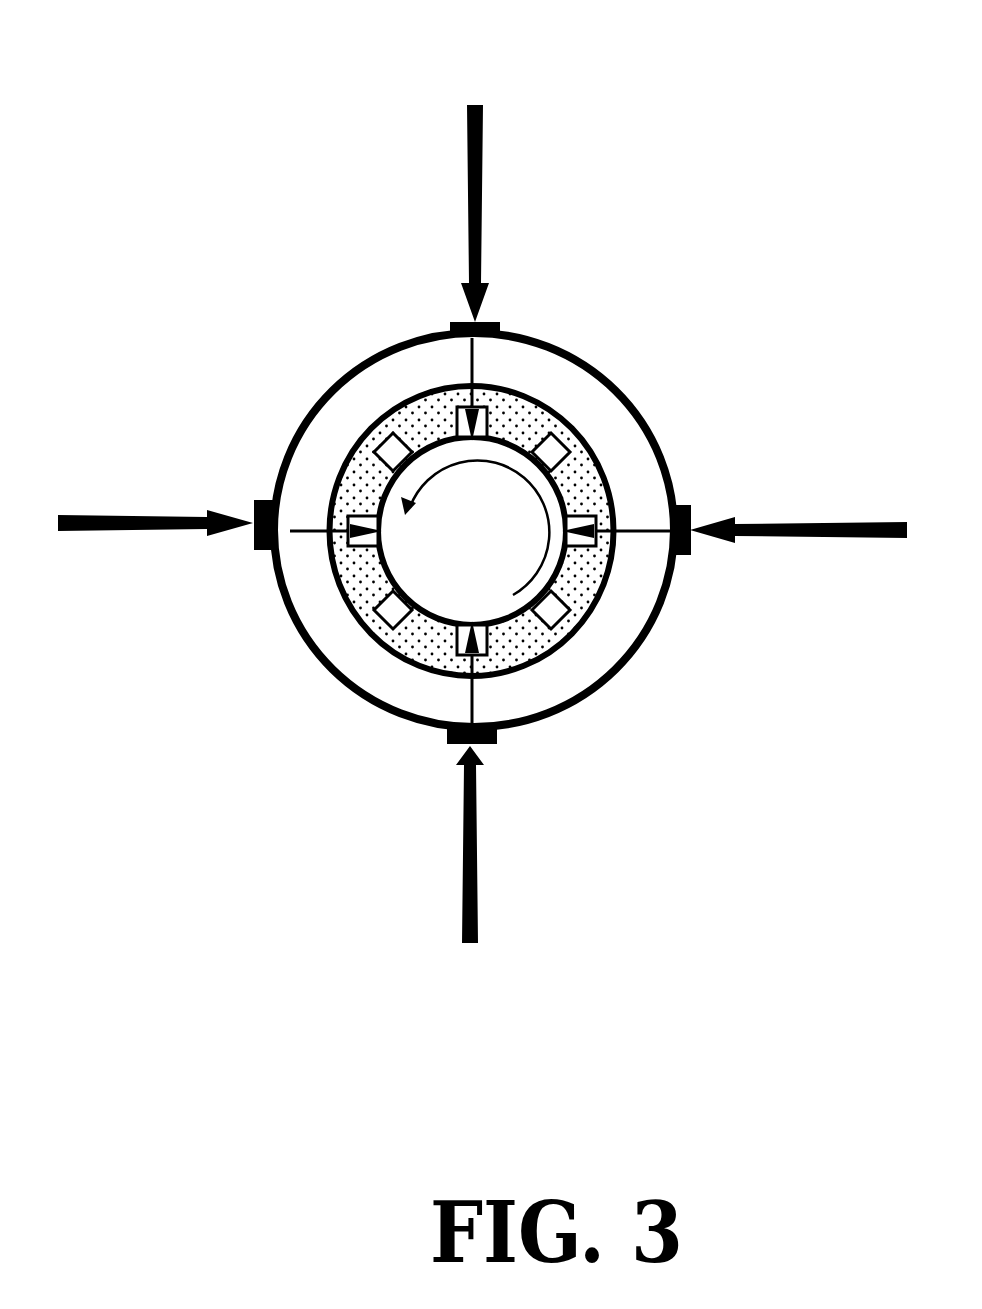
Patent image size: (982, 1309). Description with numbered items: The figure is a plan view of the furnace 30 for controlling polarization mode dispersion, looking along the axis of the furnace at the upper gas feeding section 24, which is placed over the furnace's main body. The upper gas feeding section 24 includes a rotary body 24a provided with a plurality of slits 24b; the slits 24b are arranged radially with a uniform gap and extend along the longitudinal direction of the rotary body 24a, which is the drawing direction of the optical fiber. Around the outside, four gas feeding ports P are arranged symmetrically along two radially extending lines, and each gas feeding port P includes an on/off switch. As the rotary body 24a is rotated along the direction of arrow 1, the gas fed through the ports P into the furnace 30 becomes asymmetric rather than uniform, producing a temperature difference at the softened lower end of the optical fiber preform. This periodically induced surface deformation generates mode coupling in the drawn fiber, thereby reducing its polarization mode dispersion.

The furnace 30 is at (619, 330).
The upper gas feeding section 24 is at (650, 425).
The rotary body 24a is at (585, 593).
The slit 24b is at (620, 485).
The arrow 1 is at (438, 472).
The gas feeding port P is at (256, 545).